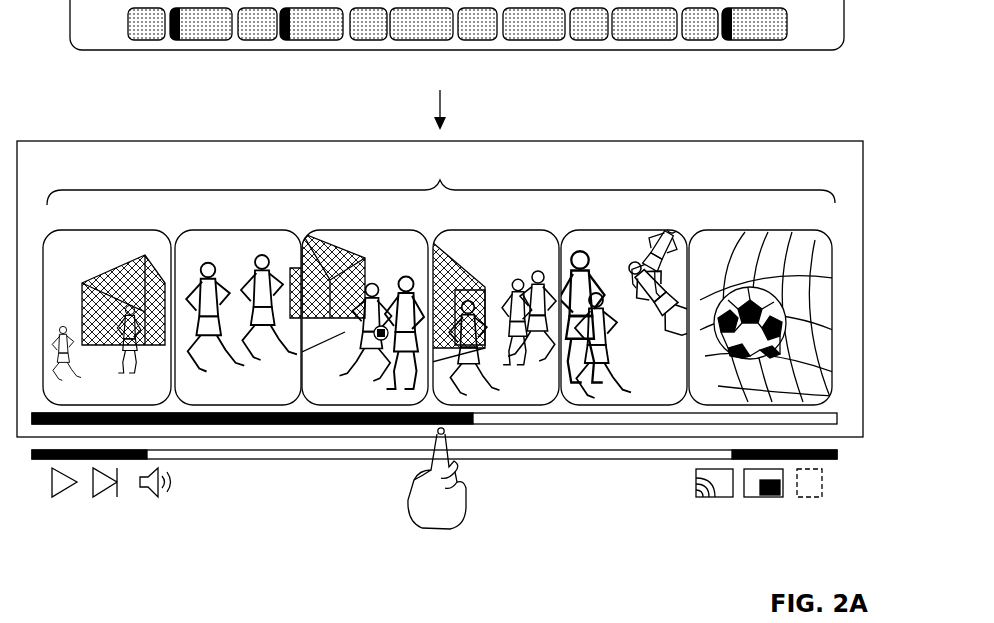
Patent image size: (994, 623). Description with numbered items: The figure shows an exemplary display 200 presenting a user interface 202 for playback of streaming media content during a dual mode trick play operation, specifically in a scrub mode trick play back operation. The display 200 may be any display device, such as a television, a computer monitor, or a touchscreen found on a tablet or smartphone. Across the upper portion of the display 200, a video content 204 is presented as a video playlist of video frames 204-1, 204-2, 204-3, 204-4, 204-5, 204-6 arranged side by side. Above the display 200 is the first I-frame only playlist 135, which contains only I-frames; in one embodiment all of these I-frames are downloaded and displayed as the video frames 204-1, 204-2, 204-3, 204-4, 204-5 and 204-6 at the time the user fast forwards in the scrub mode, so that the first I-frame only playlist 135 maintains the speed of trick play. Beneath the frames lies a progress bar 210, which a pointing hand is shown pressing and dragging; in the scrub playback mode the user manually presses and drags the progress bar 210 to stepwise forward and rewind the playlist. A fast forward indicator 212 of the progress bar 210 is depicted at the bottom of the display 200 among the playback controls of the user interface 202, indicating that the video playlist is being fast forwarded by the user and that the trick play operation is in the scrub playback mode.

The first I-frame only playlist 135 is at (576, 73).
The display 200 is at (83, 138).
The user interface 202 is at (485, 486).
The video content 204 is at (419, 172).
The video frame 204-1 is at (71, 225).
The video frame 204-2 is at (202, 225).
The video frame 204-3 is at (329, 225).
The video frame 204-4 is at (460, 225).
The video frame 204-5 is at (588, 225).
The video frame 204-6 is at (724, 225).
The progress bar 210 is at (470, 420).
The fast forward indicator 212 is at (81, 500).